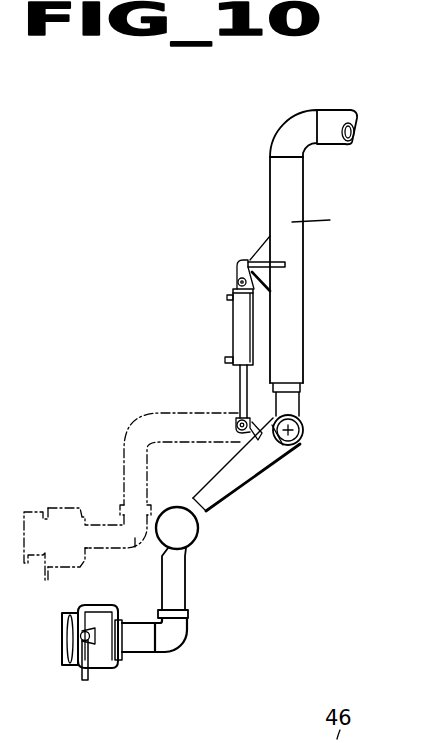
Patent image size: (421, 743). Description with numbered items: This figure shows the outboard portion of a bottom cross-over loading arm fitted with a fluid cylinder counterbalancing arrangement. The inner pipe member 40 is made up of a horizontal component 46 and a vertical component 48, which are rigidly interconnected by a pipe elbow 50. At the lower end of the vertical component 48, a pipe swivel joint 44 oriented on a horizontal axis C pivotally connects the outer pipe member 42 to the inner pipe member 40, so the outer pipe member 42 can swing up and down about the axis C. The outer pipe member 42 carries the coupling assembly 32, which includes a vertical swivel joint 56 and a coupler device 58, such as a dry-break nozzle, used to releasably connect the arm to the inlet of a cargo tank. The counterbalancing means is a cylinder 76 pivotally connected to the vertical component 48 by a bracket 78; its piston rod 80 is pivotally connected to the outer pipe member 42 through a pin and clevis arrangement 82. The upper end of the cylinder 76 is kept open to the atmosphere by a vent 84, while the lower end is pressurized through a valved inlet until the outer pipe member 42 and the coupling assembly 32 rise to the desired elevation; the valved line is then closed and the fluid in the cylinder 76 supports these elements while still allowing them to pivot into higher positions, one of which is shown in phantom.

The coupling assembly 32 is at (198, 642).
The inner pipe member 40 is at (303, 196).
The outer pipe member 42 is at (250, 471).
The pipe swivel joint 44 is at (304, 433).
The horizontal component 46 is at (334, 111).
The vertical component 48 is at (324, 221).
The pipe elbow 50 is at (280, 131).
The vertical swivel joint 56 is at (190, 613).
The coupler device 58 is at (119, 660).
The cylinder 76 is at (233, 320).
The bracket 78 is at (259, 262).
The piston rod 80 is at (240, 374).
The pin and clevis arrangement 82 is at (242, 434).
The vent 84 is at (228, 297).
The horizontal axis C is at (304, 421).